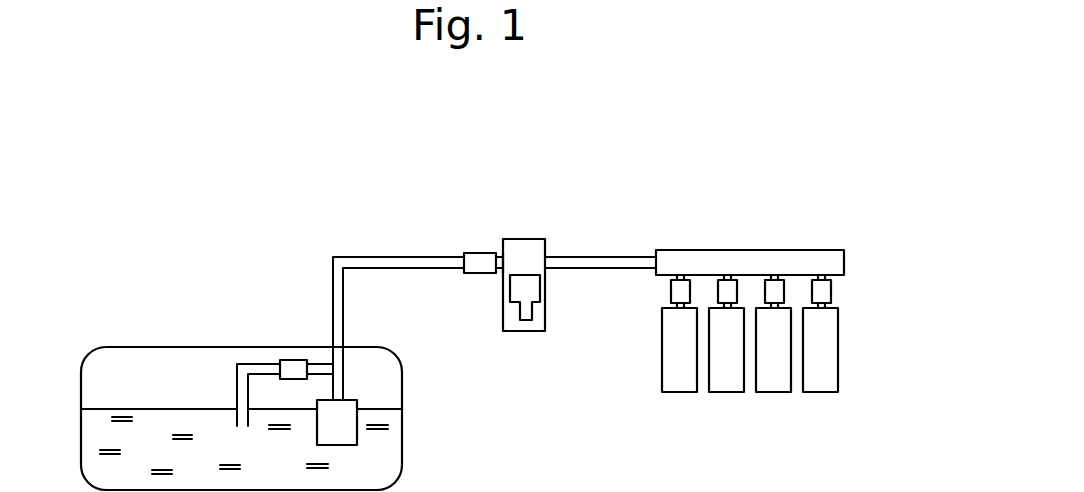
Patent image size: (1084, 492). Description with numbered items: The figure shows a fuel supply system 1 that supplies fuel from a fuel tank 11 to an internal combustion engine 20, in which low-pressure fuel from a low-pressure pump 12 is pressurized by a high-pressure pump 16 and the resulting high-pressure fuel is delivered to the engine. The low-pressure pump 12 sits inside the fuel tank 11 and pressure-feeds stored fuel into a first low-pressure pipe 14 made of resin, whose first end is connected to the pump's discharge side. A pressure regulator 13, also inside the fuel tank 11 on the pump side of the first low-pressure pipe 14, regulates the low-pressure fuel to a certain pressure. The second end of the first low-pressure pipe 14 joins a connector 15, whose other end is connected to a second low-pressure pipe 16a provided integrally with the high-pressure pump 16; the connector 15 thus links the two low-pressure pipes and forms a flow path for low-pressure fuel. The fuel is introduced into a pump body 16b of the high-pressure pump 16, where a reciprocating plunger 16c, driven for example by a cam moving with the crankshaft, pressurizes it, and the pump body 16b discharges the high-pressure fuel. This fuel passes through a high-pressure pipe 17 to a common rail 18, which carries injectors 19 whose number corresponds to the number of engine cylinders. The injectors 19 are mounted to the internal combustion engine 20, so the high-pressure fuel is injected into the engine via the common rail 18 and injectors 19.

The fuel supply system 1 is at (808, 194).
The fuel tank 11 is at (200, 347).
The low-pressure pump 12 is at (356, 400).
The pressure regulator 13 is at (293, 359).
The first low-pressure pipe 14 is at (428, 257).
The connector 15 is at (477, 273).
The high-pressure pump 16 is at (542, 260).
The second low-pressure pipe 16a is at (500, 252).
The pump body 16b is at (526, 239).
The plunger 16c is at (539, 290).
The high-pressure pipe 17 is at (600, 257).
The common rail 18 is at (718, 250).
The injector 19 is at (831, 290).
The internal combustion engine 20 is at (822, 392).